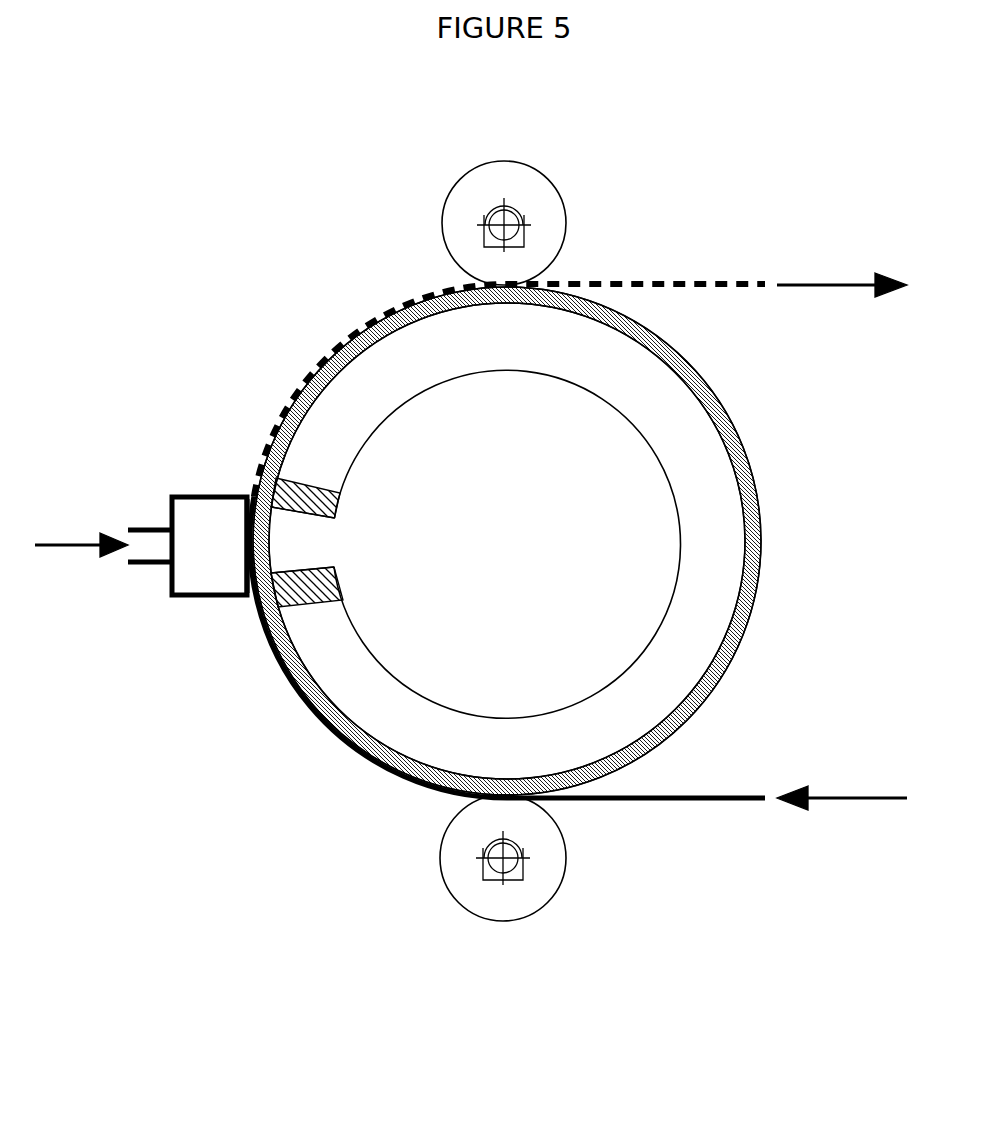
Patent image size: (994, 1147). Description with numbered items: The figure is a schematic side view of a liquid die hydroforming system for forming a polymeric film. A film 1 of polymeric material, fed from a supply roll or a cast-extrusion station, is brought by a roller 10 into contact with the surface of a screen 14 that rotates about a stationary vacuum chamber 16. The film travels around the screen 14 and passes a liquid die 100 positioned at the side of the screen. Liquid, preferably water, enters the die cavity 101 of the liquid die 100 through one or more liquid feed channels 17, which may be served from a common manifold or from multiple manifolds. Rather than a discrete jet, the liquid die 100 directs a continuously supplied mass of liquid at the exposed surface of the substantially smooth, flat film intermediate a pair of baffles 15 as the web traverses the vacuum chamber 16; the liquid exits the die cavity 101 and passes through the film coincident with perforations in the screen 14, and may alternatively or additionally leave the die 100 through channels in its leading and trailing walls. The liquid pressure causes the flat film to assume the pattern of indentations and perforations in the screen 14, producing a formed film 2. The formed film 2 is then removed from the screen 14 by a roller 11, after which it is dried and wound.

The film 1 is at (650, 801).
The formed film 2 is at (305, 379).
The roller 10 is at (515, 918).
The roller 11 is at (502, 162).
The screen 14 is at (270, 556).
The baffles 15 is at (335, 583).
The vacuum chamber 16 is at (345, 618).
The liquid feed channel 17 is at (145, 567).
The liquid die 100 is at (185, 598).
The die cavity 101 is at (222, 582).